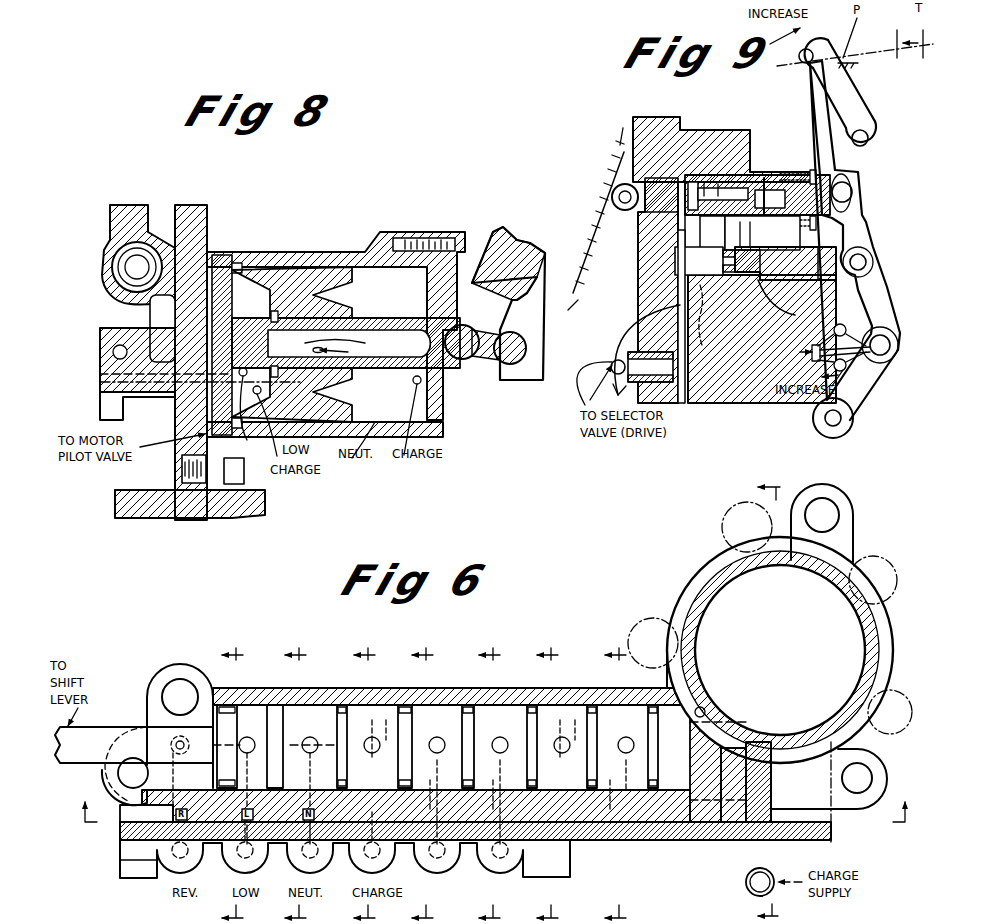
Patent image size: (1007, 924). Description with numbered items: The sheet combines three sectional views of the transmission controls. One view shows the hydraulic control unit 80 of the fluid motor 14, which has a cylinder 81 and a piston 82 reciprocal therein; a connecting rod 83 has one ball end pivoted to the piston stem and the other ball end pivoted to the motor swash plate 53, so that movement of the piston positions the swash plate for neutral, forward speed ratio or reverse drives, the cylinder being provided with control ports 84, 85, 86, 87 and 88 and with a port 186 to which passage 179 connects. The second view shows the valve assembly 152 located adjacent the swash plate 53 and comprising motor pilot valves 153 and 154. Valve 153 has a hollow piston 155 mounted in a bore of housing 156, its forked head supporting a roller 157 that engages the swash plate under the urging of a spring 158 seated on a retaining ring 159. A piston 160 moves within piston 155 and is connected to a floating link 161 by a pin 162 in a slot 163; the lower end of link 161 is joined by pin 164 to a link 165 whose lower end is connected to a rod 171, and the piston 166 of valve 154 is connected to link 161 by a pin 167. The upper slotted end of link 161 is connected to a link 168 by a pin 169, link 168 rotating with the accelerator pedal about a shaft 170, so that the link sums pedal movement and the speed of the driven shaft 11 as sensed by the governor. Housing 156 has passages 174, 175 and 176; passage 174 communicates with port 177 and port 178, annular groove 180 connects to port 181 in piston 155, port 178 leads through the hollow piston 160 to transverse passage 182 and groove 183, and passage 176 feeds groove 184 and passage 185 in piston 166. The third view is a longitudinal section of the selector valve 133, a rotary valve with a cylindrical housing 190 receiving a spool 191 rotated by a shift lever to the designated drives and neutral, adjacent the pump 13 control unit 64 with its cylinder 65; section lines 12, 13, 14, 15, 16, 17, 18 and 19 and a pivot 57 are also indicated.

In FIG. 8, the hydraulic control unit 80 is at (258, 250).
In FIG. 8, the cylinder 81 is at (330, 252).
In FIG. 8, the piston 82 is at (300, 266).
In FIG. 8, the connecting rod 83 is at (480, 362).
In FIG. 8, the control port 84 is at (224, 354).
In FIG. 8, the control port 85 is at (247, 393).
In FIG. 8, the control port 86 is at (262, 382).
In FIG. 8, the control port 87 is at (346, 347).
In FIG. 8, the control port 88 is at (421, 383).
In FIG. 8, the swash plate 53 is at (512, 233).
In FIG. 9, the swash plate 53 is at (612, 170).
In FIG. 8, the pivot 57 is at (548, 270).
In FIG. 9, the pivot 57 is at (592, 214).
In FIG. 8, the port 186 is at (205, 436).
In FIG. 9, the valve assembly 152 is at (838, 238).
In FIG. 9, the motor pilot valve 153 is at (742, 155).
In FIG. 9, the motor pilot valve 154 is at (784, 278).
In FIG. 9, the hollow piston 155 is at (688, 178).
In FIG. 9, the housing 156 is at (680, 115).
In FIG. 9, the roller 157 is at (610, 186).
In FIG. 9, the spring 158 is at (802, 170).
In FIG. 9, the retaining ring 159 is at (852, 210).
In FIG. 9, the piston 160 is at (764, 176).
In FIG. 9, the floating link 161 is at (878, 300).
In FIG. 9, the pin 162 is at (852, 192).
In FIG. 9, the slot 163 is at (851, 180).
In FIG. 9, the pin 164 is at (885, 360).
In FIG. 9, the link 165 is at (860, 390).
In FIG. 9, the piston 166 is at (822, 278).
In FIG. 9, the pin 167 is at (874, 262).
In FIG. 9, the link 168 is at (840, 95).
In FIG. 9, the pin 169 is at (800, 66).
In FIG. 9, the shaft 170 is at (870, 138).
In FIG. 9, the rod 171 is at (855, 424).
In FIG. 9, the fluid passage 174 is at (680, 312).
In FIG. 9, the fluid passage 175 is at (725, 196).
In FIG. 9, the fluid passage 176 is at (800, 360).
In FIG. 9, the port 177 is at (690, 262).
In FIG. 9, the port 178 is at (652, 212).
In FIG. 9, the passage 179 is at (715, 380).
In FIG. 9, the annular groove 180 is at (762, 233).
In FIG. 9, the port 181 is at (760, 212).
In FIG. 9, the transverse passage 182 is at (712, 233).
In FIG. 9, the annular groove 183 is at (708, 182).
In FIG. 9, the annular groove 184 is at (779, 305).
In FIG. 9, the passage 185 is at (700, 262).
In FIG. 6, the driven shaft 11 is at (765, 695).
In FIG. 6, the section line 12- 12 is at (494, 827).
In FIG. 6, the pump 13 is at (232, 777).
In FIG. 6, the fluid motor 14 is at (295, 777).
In FIG. 6, the section line 15- 15 is at (364, 777).
In FIG. 6, the section line 16- 16 is at (422, 777).
In FIG. 6, the section line 17- 17 is at (489, 777).
In FIG. 6, the section line 18- 18 is at (547, 777).
In FIG. 6, the section line 19- 19 is at (615, 777).
In FIG. 6, the hydraulic control unit 64 is at (688, 570).
In FIG. 6, the cylinder 65 is at (702, 604).
In FIG. 6, the selector valve 133 is at (152, 673).
In FIG. 6, the cylindrical housing 190 is at (597, 835).
In FIG. 6, the spool 191 is at (312, 718).